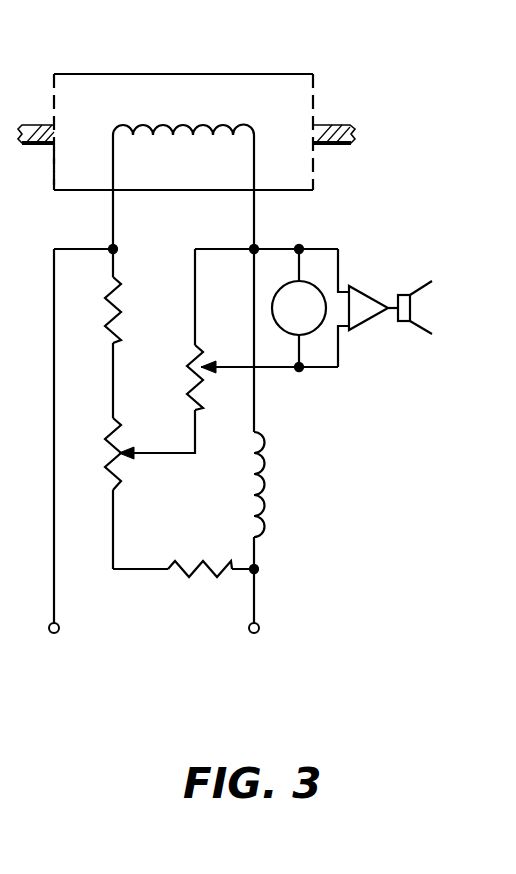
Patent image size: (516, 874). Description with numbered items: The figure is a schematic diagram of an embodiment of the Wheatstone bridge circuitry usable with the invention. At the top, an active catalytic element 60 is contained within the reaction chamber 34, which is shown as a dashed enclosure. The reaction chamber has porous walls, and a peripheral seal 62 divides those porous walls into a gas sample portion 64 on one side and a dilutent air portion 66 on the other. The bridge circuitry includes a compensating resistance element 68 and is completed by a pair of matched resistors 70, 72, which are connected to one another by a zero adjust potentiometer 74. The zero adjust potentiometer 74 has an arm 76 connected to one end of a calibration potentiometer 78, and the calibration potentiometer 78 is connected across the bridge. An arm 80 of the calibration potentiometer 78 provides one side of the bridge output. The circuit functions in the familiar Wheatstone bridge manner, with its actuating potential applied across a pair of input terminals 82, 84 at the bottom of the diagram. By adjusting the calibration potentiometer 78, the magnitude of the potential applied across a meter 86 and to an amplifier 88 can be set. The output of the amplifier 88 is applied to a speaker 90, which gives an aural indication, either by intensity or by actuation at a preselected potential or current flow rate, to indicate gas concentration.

The reaction chamber 34 is at (300, 191).
The active catalytic element 60 is at (183, 125).
The peripheral seal 62 is at (345, 125).
The gas sample portion 64 is at (54, 96).
The dilutent air portion 66 is at (54, 168).
The compensating resistance element 68 is at (265, 465).
The matched resistor 70 is at (128, 312).
The matched resistor 72 is at (200, 577).
The zero adjust potentiometer 74 is at (108, 448).
The arm 76 is at (136, 458).
The calibration potentiometer 78 is at (188, 348).
The arm 80 is at (237, 366).
The input terminal 82 is at (60, 630).
The input terminal 84 is at (260, 628).
The meter 86 is at (312, 338).
The amplifier 88 is at (378, 314).
The speaker 90 is at (430, 282).